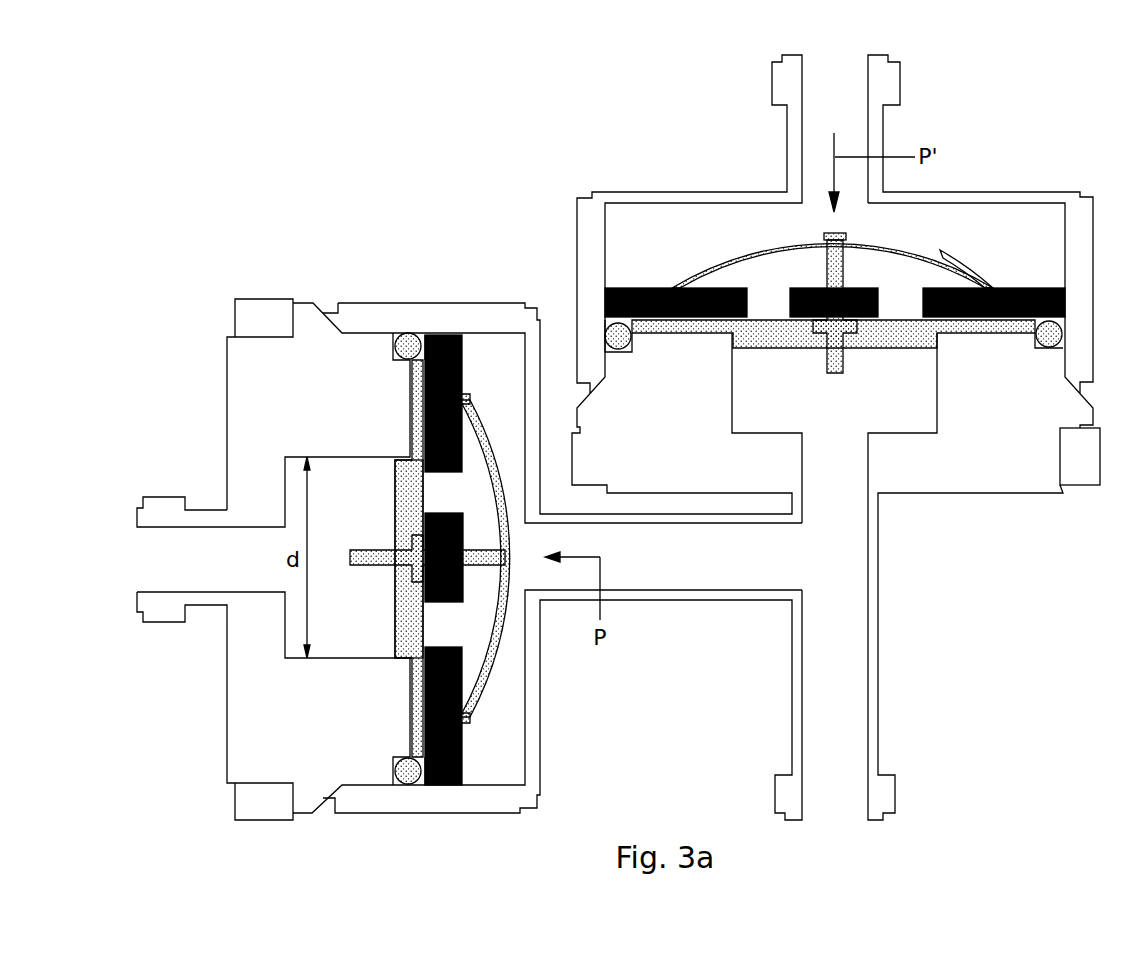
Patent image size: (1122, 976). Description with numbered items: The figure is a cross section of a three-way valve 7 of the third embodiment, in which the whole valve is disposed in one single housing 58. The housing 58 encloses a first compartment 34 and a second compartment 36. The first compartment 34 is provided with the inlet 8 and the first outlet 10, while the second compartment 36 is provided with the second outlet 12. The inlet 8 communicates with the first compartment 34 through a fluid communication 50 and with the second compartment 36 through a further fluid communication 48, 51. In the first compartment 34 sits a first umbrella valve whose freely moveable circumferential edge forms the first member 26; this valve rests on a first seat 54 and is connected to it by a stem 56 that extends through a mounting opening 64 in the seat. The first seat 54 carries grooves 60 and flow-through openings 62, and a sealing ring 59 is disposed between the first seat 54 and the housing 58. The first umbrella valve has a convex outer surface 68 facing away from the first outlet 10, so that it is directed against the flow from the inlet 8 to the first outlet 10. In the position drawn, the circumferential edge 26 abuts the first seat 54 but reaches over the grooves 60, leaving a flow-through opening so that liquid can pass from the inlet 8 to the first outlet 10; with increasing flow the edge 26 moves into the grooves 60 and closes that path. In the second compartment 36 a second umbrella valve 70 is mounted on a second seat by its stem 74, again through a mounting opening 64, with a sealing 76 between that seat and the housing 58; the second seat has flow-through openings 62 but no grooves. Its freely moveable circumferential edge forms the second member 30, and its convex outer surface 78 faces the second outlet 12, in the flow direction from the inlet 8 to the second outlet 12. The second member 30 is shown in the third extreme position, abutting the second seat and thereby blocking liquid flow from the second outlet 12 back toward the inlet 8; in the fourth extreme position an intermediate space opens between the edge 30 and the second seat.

The three-way valve 7 is at (660, 699).
The inlet 8 is at (834, 795).
The first outlet 10 is at (160, 563).
The second outlet 12 is at (833, 82).
The first member 26 is at (463, 397).
The second member 30 is at (670, 285).
The first compartment 34 is at (466, 623).
The second compartment 36 is at (672, 241).
The fluid communication 48 is at (846, 665).
The connecting channel 50 is at (718, 563).
The fluid communication 51 is at (834, 472).
The first seat 54 is at (462, 358).
The stem of the first umbrella valve 56 is at (360, 547).
The housing 58 is at (363, 320).
The sealing ring 59 is at (408, 345).
The grooves 60 is at (416, 718).
The flow-through openings 62 is at (441, 503).
The mounting opening 64 is at (395, 568).
The convex outer surface 68 is at (490, 685).
The second umbrella valve 70 is at (957, 250).
The stem of the second umbrella valve 74 is at (845, 362).
The sealing 76 is at (612, 331).
The convex outer surface of the second umbrella valve 78 is at (747, 240).